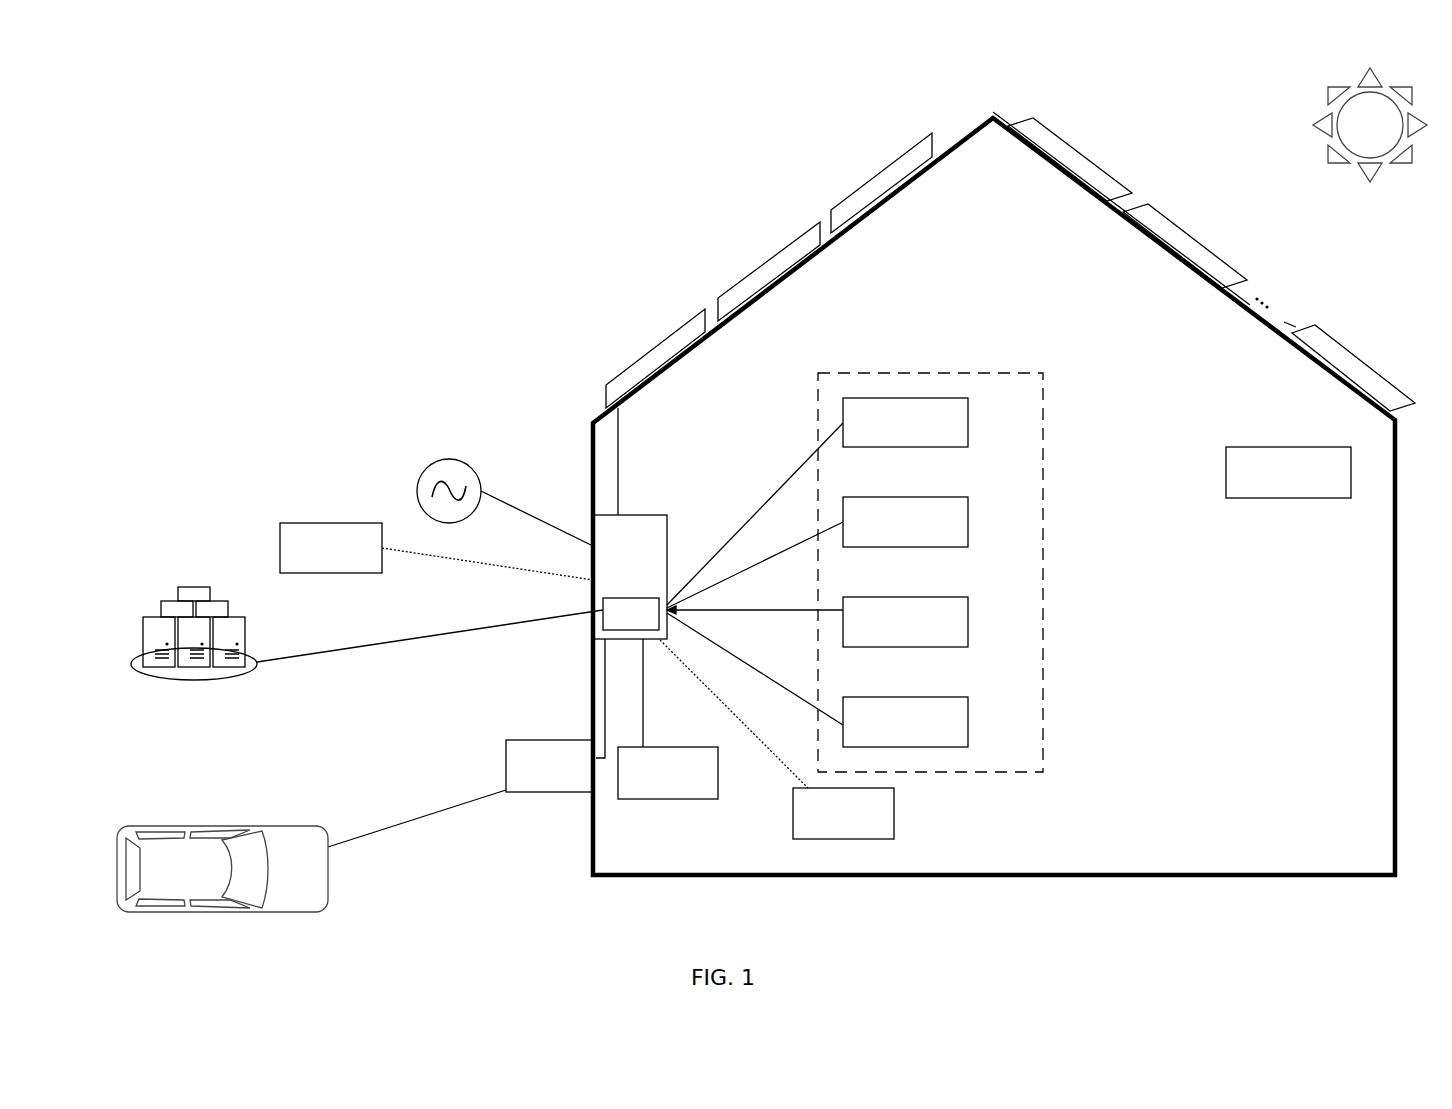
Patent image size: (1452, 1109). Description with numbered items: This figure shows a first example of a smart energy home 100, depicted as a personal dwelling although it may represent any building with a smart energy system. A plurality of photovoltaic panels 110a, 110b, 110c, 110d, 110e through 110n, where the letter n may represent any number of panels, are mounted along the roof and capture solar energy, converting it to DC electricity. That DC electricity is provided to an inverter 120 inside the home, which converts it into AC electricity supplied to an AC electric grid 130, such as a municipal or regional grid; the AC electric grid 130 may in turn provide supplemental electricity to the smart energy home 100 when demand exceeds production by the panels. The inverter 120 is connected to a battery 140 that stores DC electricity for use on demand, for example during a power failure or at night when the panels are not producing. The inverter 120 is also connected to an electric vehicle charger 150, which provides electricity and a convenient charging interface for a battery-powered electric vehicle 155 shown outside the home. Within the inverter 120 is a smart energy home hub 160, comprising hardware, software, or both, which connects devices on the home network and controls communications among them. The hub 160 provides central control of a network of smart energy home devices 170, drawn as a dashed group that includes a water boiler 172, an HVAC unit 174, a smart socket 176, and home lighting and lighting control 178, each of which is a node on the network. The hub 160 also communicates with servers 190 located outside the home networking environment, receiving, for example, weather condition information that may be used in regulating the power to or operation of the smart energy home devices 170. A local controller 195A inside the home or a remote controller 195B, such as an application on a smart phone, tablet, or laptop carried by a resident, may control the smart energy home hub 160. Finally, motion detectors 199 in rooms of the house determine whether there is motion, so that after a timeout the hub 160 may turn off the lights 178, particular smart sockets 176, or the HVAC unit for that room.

The smart energy home 100 is at (1397, 495).
The photovoltaic panel 110a is at (630, 374).
The photovoltaic panel 110b is at (732, 294).
The photovoltaic panel 110c is at (910, 156).
The photovoltaic panel 110d is at (1122, 191).
The photovoltaic panel 110e is at (1240, 279).
The photovoltaic panel 110n is at (1400, 395).
The inverter 120 is at (640, 515).
The AC electric grid 130 is at (448, 459).
The battery 140 is at (682, 747).
The electric vehicle charger 150 is at (528, 740).
The electric vehicle 155 is at (240, 826).
The smart energy home hub 160 is at (603, 626).
The smart energy home devices 170 is at (1043, 462).
The water boiler 172 is at (968, 413).
The HVAC unit 174 is at (968, 519).
The smart socket 176 is at (968, 619).
The home lighting and lighting control 178 is at (968, 717).
The servers 190 is at (206, 680).
The local controller 195A is at (860, 839).
The remote controller 195B is at (322, 523).
The motion detectors 199 is at (1226, 478).